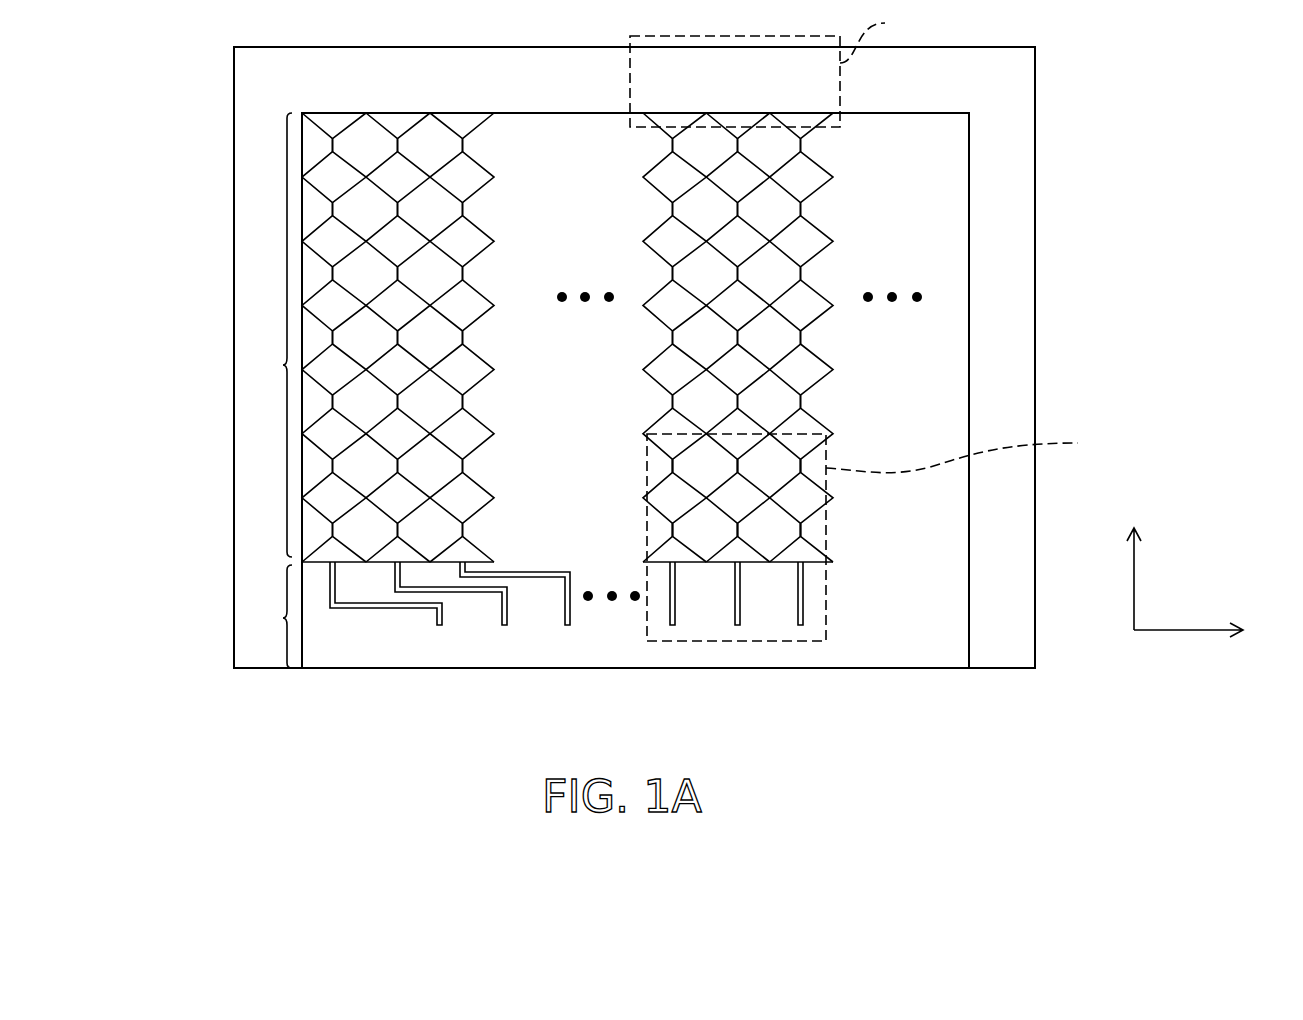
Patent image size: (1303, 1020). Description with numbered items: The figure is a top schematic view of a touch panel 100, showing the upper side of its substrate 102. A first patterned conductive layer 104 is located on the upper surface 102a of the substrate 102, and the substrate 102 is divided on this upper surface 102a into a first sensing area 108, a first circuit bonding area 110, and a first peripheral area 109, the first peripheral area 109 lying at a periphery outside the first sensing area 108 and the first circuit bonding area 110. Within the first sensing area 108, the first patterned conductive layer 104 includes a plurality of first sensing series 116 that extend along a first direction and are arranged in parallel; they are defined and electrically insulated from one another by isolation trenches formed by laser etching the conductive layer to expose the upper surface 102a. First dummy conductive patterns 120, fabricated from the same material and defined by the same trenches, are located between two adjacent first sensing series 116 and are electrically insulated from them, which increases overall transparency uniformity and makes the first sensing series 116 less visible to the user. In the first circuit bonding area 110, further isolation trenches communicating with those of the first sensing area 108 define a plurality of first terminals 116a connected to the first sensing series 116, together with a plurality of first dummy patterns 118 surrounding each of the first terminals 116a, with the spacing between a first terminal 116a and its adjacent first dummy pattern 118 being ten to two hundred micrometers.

The touch panel 100 is at (703, 354).
The substrate 102 is at (583, 357).
The upper surface 102a is at (258, 268).
The first patterned conductive layer 104 is at (234, 505).
The first sensing area 108 is at (285, 365).
The first peripheral area 109 is at (253, 185).
The first circuit bonding area 110 is at (285, 618).
The first sensing series 116 is at (742, 497).
The first terminal 116a is at (800, 571).
The first dummy pattern 118 is at (772, 593).
The first dummy conductive pattern 120 is at (772, 526).